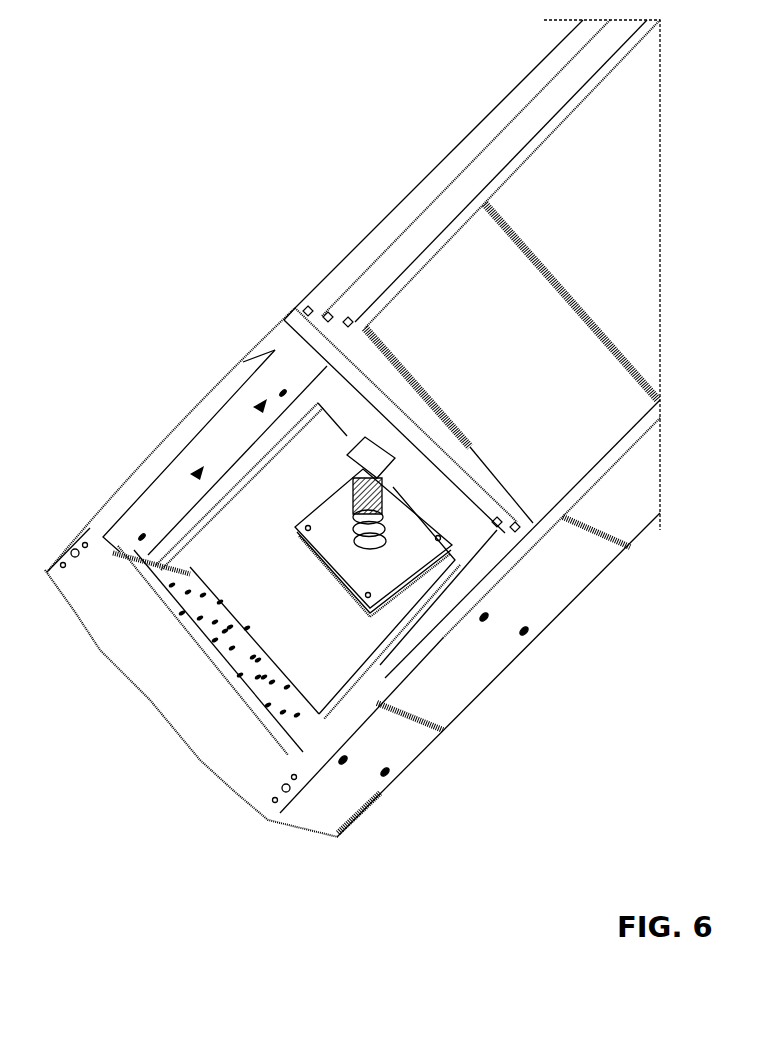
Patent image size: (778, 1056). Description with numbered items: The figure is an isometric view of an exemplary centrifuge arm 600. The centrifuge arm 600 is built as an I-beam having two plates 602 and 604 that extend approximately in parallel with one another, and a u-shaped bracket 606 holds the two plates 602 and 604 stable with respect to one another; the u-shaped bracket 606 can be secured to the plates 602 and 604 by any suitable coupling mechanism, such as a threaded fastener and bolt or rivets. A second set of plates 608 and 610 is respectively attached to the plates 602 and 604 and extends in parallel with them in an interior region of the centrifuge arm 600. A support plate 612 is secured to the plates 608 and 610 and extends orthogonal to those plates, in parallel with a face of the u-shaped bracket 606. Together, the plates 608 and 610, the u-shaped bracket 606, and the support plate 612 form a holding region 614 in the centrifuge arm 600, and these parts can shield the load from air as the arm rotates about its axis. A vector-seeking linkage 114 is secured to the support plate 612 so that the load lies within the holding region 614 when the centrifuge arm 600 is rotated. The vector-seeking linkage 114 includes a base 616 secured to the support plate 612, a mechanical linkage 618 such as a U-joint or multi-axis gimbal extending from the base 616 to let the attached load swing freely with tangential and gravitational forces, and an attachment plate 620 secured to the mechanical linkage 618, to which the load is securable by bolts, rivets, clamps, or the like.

The centrifuge arm 600 is at (190, 380).
The plate 602 is at (485, 128).
The plate 604 is at (513, 660).
The u-shaped bracket 606 is at (233, 795).
The plate 608 is at (266, 337).
The plate 610 is at (367, 660).
The support plate 612 is at (486, 468).
The holding region 614 is at (244, 543).
The base 616 is at (350, 450).
The mechanical linkage 618 is at (358, 490).
The attachment plate 620 is at (322, 557).
The vector-seeking linkage 114 is at (337, 542).